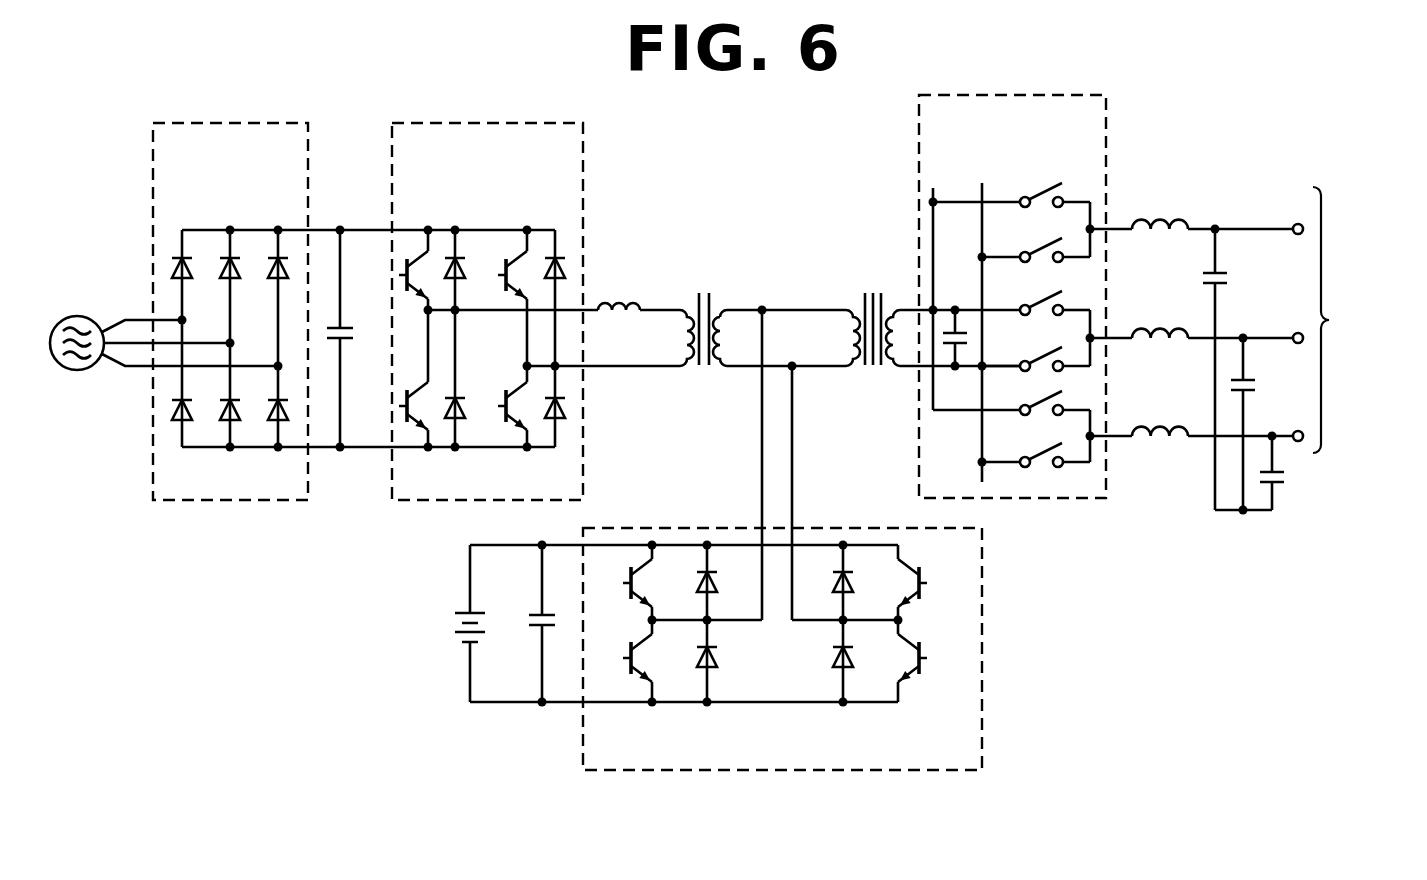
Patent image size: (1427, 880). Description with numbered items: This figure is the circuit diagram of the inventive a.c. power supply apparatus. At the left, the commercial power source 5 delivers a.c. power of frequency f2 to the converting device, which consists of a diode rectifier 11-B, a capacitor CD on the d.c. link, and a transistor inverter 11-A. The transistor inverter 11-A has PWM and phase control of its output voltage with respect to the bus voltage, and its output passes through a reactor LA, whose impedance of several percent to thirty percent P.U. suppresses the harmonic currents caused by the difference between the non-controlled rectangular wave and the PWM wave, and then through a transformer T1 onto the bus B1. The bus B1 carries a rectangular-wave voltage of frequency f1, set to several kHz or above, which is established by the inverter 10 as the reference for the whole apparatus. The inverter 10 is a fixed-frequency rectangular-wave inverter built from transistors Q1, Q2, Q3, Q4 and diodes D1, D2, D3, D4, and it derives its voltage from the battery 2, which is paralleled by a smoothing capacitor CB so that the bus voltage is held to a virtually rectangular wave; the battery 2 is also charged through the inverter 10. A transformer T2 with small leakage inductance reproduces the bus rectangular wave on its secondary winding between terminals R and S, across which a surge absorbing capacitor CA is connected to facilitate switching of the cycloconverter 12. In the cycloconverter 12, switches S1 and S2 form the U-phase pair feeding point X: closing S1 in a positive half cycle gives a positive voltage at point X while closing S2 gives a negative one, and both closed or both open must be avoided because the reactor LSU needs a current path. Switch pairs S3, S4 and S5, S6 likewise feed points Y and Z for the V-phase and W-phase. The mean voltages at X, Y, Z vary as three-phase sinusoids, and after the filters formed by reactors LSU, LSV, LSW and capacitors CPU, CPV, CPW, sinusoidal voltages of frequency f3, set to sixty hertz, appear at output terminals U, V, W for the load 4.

The commercial power source 5 is at (89, 318).
The commercial power source frequency f2 is at (137, 320).
The diode rectifier 11-B is at (186, 121).
The capacitor CD is at (357, 339).
The transistor inverter 11-A is at (436, 122).
The reactor LA is at (619, 291).
The transformer T1 is at (707, 320).
The bus frequency f1 is at (803, 309).
The bus B1 is at (796, 465).
The transformer T2 is at (940, 315).
The cycloconverter 12 is at (996, 296).
The transformer secondary terminal R is at (934, 282).
The transformer secondary terminal S is at (982, 318).
The surge absorbing capacitor CA is at (961, 323).
The switch S1 is at (1011, 181).
The switch S2 is at (1036, 242).
The switch S3 is at (1045, 295).
The switch S4 is at (1036, 350).
The switch S5 is at (1011, 395).
The switch S6 is at (1036, 448).
The point X is at (1109, 243).
The point Y is at (1109, 350).
The point Z is at (1109, 449).
The reactor LSU is at (1212, 208).
The reactor LSV is at (1212, 317).
The reactor LSW is at (1212, 415).
The filter capacitor CPU is at (1242, 368).
The filter capacitor CPV is at (1270, 424).
The filter capacitor CPW is at (1280, 471).
The output frequency f3 is at (1250, 225).
The output terminal U is at (1300, 212).
The output terminal V is at (1299, 323).
The output terminal W is at (1300, 419).
The load 4 is at (1368, 320).
The battery 2 is at (462, 618).
The smoothing capacitor CB is at (530, 624).
The inverter 10 is at (815, 649).
The transistor Q1 is at (657, 583).
The transistor Q2 is at (657, 663).
The transistor Q3 is at (933, 585).
The transistor Q4 is at (934, 661).
The diode D1 is at (729, 583).
The diode D2 is at (729, 663).
The diode D3 is at (825, 583).
The diode D4 is at (825, 663).